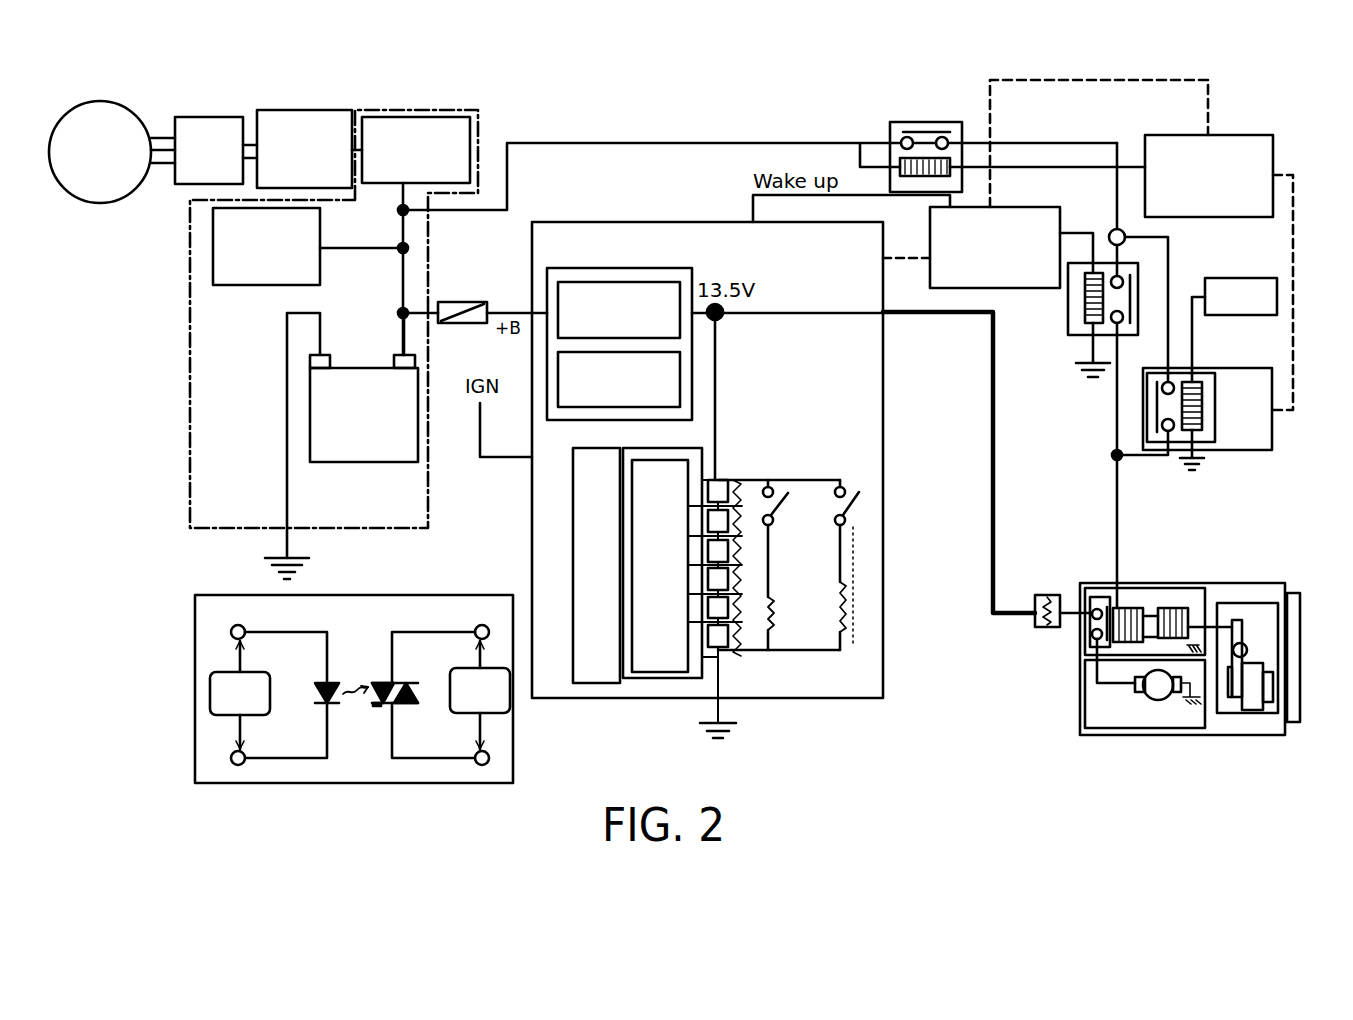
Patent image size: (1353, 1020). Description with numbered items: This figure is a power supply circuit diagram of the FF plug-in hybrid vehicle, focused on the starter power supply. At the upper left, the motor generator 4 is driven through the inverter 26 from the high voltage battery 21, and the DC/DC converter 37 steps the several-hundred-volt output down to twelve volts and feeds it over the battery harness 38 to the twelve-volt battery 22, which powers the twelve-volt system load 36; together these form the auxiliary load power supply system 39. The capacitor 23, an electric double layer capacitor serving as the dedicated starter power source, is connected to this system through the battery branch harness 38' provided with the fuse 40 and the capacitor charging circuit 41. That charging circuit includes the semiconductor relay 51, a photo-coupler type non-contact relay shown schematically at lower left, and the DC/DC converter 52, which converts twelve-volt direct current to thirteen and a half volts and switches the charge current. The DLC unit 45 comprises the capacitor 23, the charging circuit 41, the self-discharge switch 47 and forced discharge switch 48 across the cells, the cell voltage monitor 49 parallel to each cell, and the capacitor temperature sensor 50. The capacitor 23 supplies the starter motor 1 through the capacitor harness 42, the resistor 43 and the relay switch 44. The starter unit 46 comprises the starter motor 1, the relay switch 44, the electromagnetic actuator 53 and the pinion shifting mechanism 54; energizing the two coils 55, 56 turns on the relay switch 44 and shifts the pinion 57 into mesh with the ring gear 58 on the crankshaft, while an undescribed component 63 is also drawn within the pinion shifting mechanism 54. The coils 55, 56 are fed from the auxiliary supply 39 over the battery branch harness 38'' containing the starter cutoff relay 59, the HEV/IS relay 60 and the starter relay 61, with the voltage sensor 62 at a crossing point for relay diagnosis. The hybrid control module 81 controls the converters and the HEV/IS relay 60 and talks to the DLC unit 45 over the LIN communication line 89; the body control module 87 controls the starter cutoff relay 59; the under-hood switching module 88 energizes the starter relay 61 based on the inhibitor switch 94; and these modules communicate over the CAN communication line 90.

The starter motor 1 is at (1080, 722).
The motor generator 4 is at (100, 100).
The high voltage battery 21 is at (316, 110).
The 12V battery 22 is at (382, 443).
The capacitor 23 is at (720, 478).
The inverter 26 is at (232, 117).
The 12V system load 36 is at (237, 285).
The DC/DC converter 37 is at (428, 110).
The battery harness 38 is at (390, 269).
The battery branch harness 38' is at (514, 265).
The battery branch harness 38'' is at (652, 141).
The auxiliary load power supply system 39 is at (182, 426).
The fuse 40 is at (462, 302).
The capacitor charging circuit 41 is at (665, 265).
The capacitor harness 42 is at (993, 385).
The resistor 43 is at (1045, 595).
The relay switch 44 is at (1100, 600).
The DLC unit 45 is at (803, 700).
The starter unit 46 is at (1180, 588).
The self-discharge switch 47 is at (768, 482).
The forced discharge switch 48 is at (840, 482).
The cell voltage monitor 49 is at (663, 673).
The capacitor temperature sensor 50 is at (599, 683).
The semiconductor relay 51 is at (601, 282).
The DC/DC converter 52 is at (570, 407).
The electromagnetic actuator 53 is at (1150, 588).
The pinion shifting mechanism 54 is at (1238, 603).
The coil 55 is at (1128, 640).
The coil 56 is at (1182, 608).
The pinion 57 is at (1260, 712).
The ring gear 58 is at (1293, 690).
The starter cutoff relay 59 is at (928, 122).
The HEV/IS relay 60 is at (1068, 312).
The starter relay 61 is at (1200, 380).
The voltage sensor 62 is at (1110, 230).
The lever pivot 63 is at (1247, 645).
The hybrid control module 81 is at (1015, 207).
The body control module 87 is at (1260, 135).
The under-hood switching module 88 is at (1250, 450).
The LIN communication line 89 is at (905, 256).
The CAN communication line 90 is at (1148, 80).
The inhibitor switch 94 is at (1237, 278).